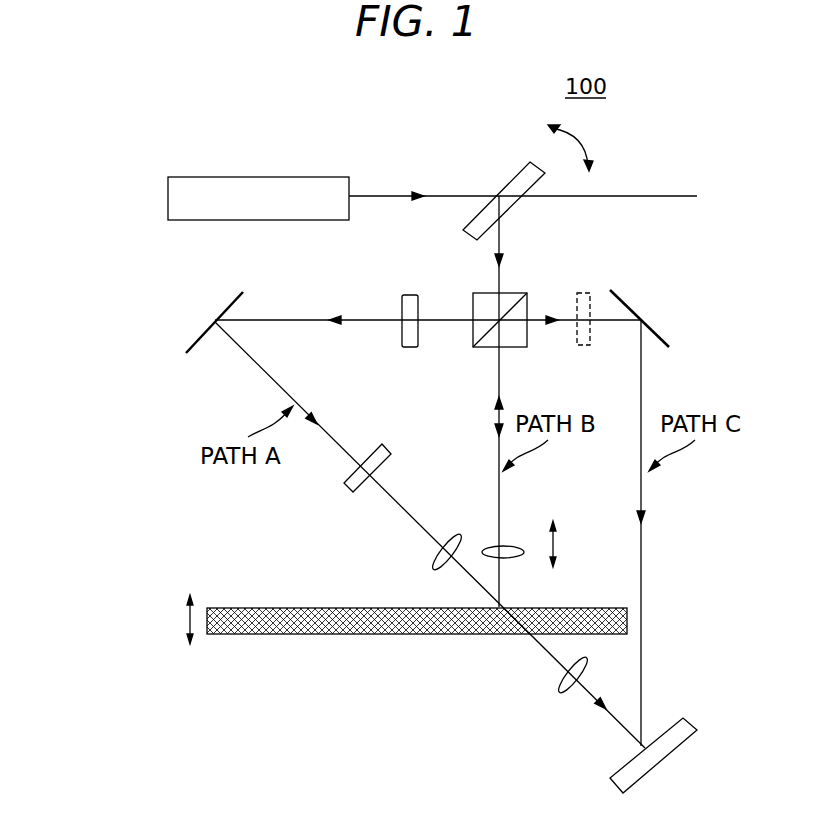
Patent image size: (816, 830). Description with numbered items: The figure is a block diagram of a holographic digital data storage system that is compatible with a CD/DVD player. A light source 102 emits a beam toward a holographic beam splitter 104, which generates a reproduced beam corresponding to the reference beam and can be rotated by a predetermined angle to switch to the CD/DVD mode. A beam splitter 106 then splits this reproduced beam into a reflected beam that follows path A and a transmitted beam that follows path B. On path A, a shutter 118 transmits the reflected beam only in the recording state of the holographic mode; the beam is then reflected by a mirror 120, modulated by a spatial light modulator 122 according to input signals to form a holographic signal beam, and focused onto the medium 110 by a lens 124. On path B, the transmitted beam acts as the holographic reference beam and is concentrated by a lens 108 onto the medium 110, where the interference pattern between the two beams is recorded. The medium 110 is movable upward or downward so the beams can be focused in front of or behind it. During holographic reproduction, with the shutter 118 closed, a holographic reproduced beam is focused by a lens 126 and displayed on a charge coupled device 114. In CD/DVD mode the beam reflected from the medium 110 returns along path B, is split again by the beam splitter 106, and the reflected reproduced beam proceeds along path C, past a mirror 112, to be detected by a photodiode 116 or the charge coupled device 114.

The light source 102 is at (293, 177).
The holographic beam splitter 104 is at (520, 172).
The beam splitter 106 is at (512, 293).
The lens 108 is at (520, 546).
The medium 110 is at (377, 634).
The mirror 112 is at (655, 328).
The charge coupled device (CCD) 114 is at (678, 752).
The photodiode (PD) 116 is at (585, 292).
The shutter 118 is at (408, 295).
The mirror 120 is at (208, 328).
The spatial light modulator (SLM) 122 is at (344, 488).
The lens 124 is at (435, 565).
The lens 126 is at (562, 690).